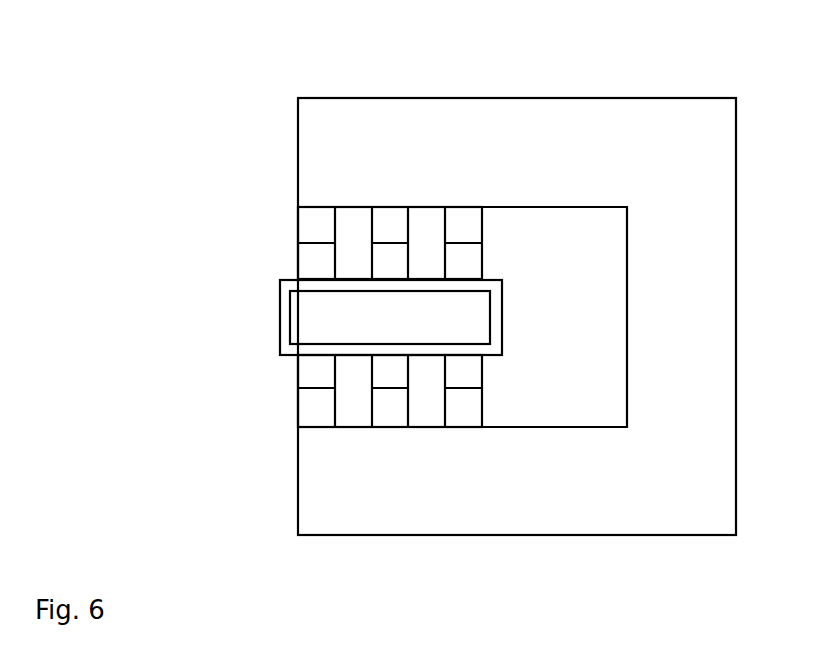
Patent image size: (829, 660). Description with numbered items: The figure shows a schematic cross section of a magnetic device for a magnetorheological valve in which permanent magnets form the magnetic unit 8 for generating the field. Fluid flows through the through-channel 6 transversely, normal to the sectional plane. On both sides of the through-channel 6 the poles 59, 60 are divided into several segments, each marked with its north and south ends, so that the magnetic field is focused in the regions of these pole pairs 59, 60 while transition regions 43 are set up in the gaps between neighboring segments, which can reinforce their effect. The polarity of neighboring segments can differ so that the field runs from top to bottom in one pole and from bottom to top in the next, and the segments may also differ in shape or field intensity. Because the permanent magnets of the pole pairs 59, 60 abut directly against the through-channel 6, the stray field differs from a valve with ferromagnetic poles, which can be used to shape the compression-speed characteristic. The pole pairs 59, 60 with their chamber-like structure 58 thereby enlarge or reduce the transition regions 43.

The magnetic unit 8 is at (308, 108).
The chamber-like structure 58 is at (250, 152).
The pole 60 is at (458, 207).
The pole 59 is at (450, 413).
The through-channel 6 is at (302, 310).
The transition region 43 is at (353, 305).